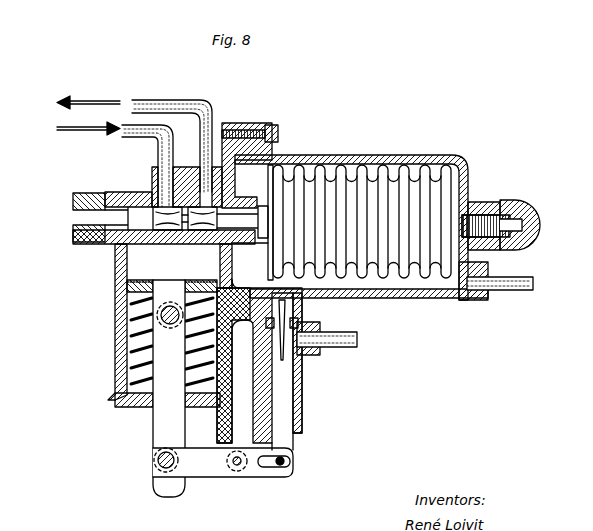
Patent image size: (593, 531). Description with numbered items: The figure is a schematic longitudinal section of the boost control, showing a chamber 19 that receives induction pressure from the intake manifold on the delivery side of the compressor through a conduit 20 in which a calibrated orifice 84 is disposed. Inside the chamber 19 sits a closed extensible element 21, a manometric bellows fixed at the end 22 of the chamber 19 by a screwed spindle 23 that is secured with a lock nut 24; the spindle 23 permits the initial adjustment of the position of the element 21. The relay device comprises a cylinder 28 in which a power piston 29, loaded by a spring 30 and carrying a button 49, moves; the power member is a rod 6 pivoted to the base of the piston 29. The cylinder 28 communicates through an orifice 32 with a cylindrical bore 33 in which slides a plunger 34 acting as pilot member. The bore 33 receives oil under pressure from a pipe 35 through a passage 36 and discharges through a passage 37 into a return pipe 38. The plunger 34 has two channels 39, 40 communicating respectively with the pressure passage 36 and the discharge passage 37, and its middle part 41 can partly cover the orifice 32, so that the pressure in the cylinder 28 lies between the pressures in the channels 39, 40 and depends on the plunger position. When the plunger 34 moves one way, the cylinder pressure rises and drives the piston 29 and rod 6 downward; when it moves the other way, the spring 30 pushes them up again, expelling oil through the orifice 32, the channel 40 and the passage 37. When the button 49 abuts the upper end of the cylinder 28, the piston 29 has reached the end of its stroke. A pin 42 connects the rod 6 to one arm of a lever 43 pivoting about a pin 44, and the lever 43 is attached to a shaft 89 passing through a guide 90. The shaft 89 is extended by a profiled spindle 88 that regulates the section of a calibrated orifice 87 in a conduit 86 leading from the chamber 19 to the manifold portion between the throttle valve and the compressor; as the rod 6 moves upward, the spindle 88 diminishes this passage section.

The rod 6 is at (165, 427).
The chamber 19 is at (437, 166).
The conduit 20 is at (523, 285).
The closed extensible element 21 is at (384, 172).
The end of the chamber 22 is at (468, 207).
The screwed spindle 23 is at (505, 227).
The lock nut 24 is at (490, 212).
The cylinder 28 is at (224, 279).
The power piston 29 is at (125, 296).
The spring 30 is at (142, 332).
The orifice 32 is at (184, 233).
The cylindrical bore 33 is at (198, 233).
The plunger 34 is at (253, 216).
The pipe 35 is at (125, 131).
The passage 36 is at (152, 192).
The passage 37 is at (188, 167).
The pipe 38 is at (157, 108).
The channel 39 is at (160, 233).
The channel 40 is at (230, 247).
The part of the plunger 41 is at (118, 243).
The pin 42 is at (157, 464).
The lever 43 is at (203, 465).
The pin 44 is at (239, 464).
The button 49 is at (128, 278).
The calibrated orifice 84 is at (462, 300).
The conduit 86 is at (355, 342).
The calibrated orifice 87 is at (302, 326).
The profiled spindle 88 is at (286, 307).
The shaft 89 is at (283, 442).
The guide 90 is at (290, 408).